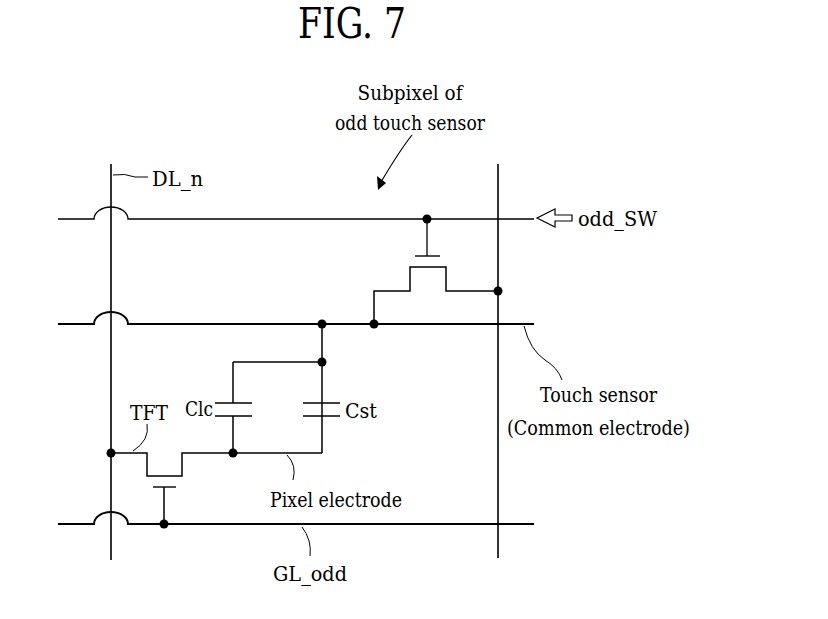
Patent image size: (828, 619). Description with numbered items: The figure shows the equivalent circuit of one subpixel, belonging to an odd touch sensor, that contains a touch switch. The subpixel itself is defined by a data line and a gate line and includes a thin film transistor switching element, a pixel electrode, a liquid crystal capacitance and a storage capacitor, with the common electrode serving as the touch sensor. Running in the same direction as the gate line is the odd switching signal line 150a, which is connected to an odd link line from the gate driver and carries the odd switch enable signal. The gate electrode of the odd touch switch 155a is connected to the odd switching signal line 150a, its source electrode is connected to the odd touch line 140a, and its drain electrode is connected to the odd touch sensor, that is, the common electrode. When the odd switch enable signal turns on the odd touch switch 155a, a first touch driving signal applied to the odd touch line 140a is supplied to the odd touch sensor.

The odd switching signal line 150a is at (270, 217).
The odd touch line 140a is at (500, 175).
The odd touch switch 155a is at (410, 279).